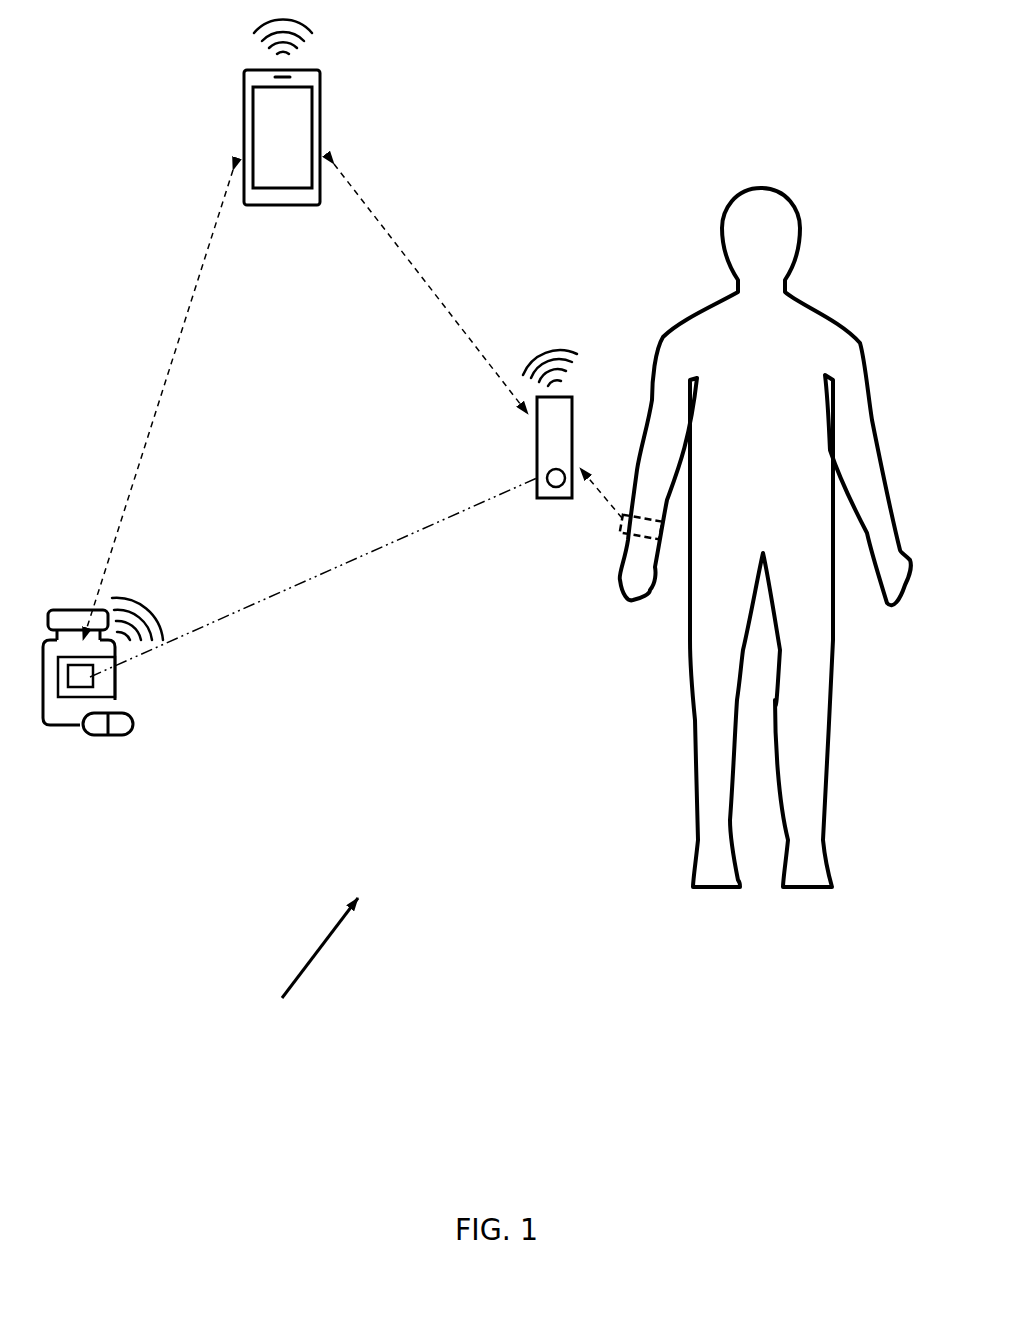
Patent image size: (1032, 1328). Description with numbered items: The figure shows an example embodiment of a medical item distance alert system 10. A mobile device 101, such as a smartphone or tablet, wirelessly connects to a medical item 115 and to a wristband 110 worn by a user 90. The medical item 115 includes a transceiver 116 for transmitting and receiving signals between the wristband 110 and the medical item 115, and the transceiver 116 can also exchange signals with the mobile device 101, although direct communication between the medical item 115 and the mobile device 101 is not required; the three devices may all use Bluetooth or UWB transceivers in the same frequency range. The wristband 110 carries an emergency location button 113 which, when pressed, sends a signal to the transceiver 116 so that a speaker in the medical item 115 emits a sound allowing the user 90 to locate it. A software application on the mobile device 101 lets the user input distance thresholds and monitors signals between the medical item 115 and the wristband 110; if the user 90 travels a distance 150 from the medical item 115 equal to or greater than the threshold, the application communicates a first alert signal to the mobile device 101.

The medical item distance alert system 10 is at (300, 971).
The mobile device 101 is at (242, 97).
The wristband 110 is at (537, 458).
The emergency location button 113 is at (556, 487).
The medical item 115 is at (73, 722).
The transceiver 116 is at (85, 676).
The distance 150 is at (330, 575).
The user 90 is at (815, 300).